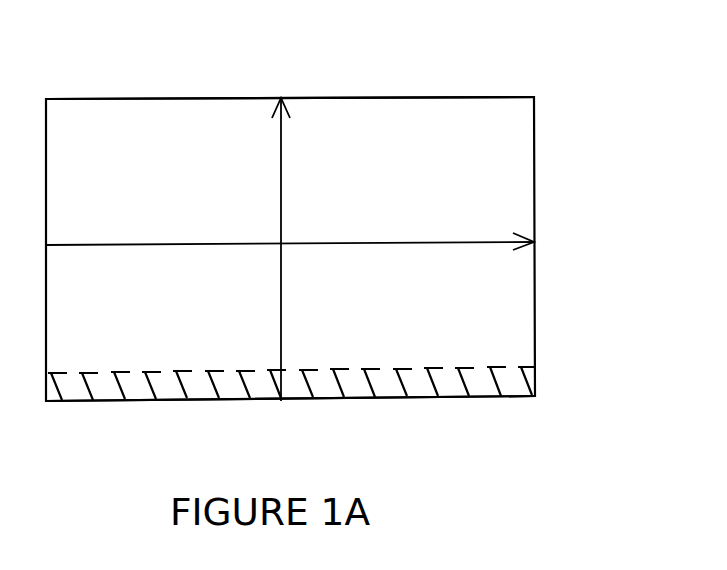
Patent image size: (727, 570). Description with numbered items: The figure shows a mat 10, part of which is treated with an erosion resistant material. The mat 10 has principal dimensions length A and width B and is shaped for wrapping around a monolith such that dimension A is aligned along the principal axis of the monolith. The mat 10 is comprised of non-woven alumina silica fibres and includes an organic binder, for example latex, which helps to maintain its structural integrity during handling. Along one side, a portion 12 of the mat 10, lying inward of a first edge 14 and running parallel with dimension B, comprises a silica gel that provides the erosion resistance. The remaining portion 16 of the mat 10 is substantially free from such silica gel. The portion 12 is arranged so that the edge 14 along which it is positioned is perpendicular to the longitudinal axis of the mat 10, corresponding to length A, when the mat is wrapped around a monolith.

The mat 10 is at (525, 260).
The portion 12 is at (520, 380).
The first edge 14 is at (445, 398).
The remaining portion 16 is at (270, 112).